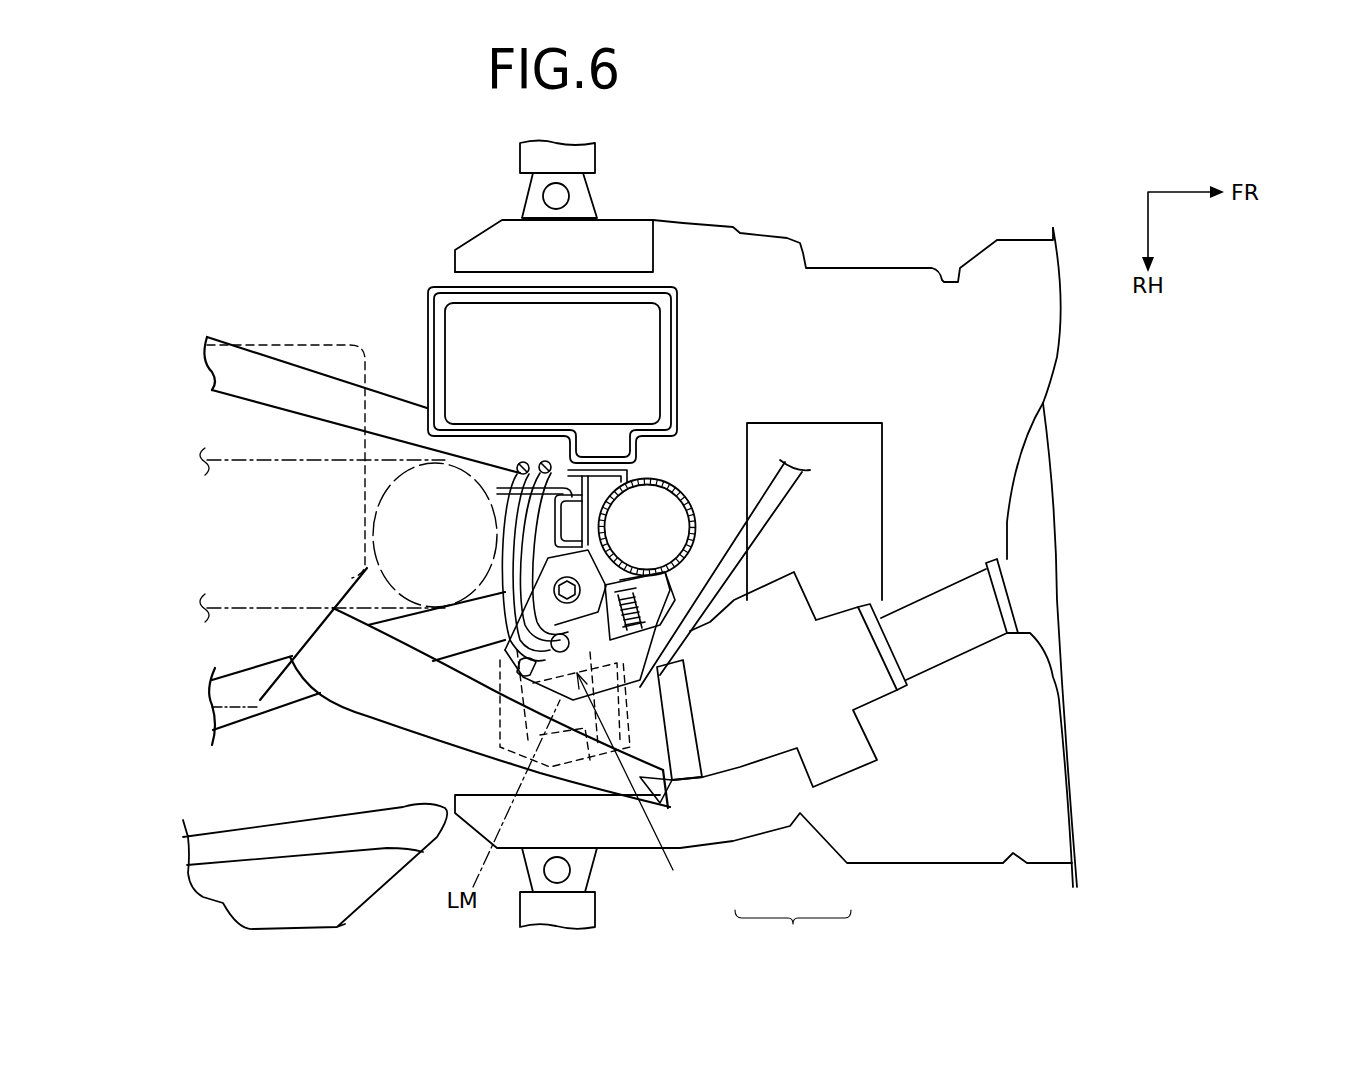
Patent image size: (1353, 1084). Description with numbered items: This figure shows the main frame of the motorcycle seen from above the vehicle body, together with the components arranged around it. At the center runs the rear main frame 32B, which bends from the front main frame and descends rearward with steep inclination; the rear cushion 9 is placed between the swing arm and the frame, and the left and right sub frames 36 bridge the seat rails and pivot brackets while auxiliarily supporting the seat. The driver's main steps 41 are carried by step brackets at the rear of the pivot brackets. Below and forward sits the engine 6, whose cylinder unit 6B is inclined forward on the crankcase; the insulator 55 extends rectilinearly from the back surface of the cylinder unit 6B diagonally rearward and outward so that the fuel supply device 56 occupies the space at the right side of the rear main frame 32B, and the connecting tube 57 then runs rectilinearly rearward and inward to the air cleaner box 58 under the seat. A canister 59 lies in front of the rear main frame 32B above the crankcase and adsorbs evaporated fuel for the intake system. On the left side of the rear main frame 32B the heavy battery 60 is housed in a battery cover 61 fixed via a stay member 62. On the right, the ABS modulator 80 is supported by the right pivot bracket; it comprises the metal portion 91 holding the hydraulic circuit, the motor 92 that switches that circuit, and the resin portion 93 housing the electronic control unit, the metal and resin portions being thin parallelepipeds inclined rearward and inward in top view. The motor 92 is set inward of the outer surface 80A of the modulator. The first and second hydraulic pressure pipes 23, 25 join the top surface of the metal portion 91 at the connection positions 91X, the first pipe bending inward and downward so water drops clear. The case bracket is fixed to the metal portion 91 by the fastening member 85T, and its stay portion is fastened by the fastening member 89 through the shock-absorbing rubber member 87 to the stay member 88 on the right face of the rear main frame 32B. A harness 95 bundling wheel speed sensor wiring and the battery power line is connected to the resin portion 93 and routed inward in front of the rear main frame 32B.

The engine 6 is at (891, 866).
The cylinder unit 6B is at (1038, 467).
The rear cushion 9 is at (250, 460).
The first hydraulic pressure pipe 23 is at (500, 566).
The second hydraulic pressure pipe 25 is at (500, 628).
The rear main frame 32B is at (677, 490).
The sub frame 36 is at (228, 335).
The main step 41 is at (532, 165).
The insulator 55 is at (960, 633).
The fuel supply device 56 is at (847, 752).
The connecting tube 57 is at (500, 690).
The air cleaner box 58 is at (320, 345).
The canister 59 is at (855, 447).
The battery 60 is at (622, 323).
The battery cover 61 is at (598, 475).
The stay member 62 is at (572, 470).
The ABS modulator 80 is at (675, 802).
The surface on the outside in the vehicle width direction of the ABS modulator 80A is at (550, 687).
The fastening member 85T is at (540, 643).
The rubber member 87 is at (673, 660).
The stay member 88 is at (683, 640).
The fastening member 89 is at (630, 587).
The metal portion 91 is at (683, 663).
The connection positions 91X is at (639, 787).
The motor 92 is at (690, 620).
The resin portion 93 is at (637, 667).
The harness 95 is at (795, 470).